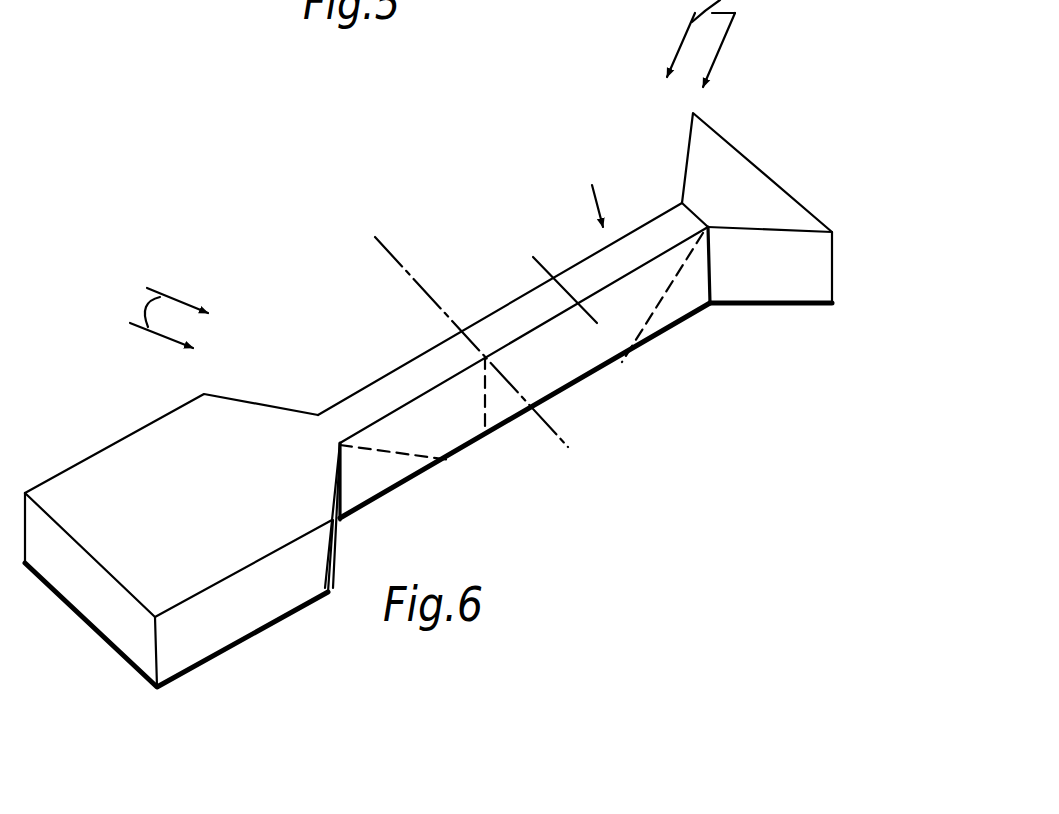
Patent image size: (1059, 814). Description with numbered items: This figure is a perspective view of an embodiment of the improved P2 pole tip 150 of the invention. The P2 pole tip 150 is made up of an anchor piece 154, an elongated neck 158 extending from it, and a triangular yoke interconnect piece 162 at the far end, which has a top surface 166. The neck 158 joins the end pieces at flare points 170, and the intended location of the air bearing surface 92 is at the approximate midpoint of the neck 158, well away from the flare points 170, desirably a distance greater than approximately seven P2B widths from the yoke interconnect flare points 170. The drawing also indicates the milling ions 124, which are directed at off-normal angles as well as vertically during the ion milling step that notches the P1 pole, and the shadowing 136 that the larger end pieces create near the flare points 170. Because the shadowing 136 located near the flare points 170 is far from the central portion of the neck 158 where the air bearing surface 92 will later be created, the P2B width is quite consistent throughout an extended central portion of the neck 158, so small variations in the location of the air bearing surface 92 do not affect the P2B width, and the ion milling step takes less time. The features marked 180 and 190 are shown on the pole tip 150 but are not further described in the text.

The air bearing surface 92 is at (403, 268).
The milling ions 124 is at (142, 306).
The shadowing 136 is at (388, 448).
The P2 pole tip 150 is at (150, 415).
The anchor piece 154 is at (213, 521).
The elongated neck 158 is at (507, 323).
The triangular yoke interconnect piece 162 is at (755, 163).
The top surface 166 is at (753, 197).
The flare points 170 is at (338, 485).
The bend line 180 is at (569, 291).
The bending direction 190 is at (583, 189).